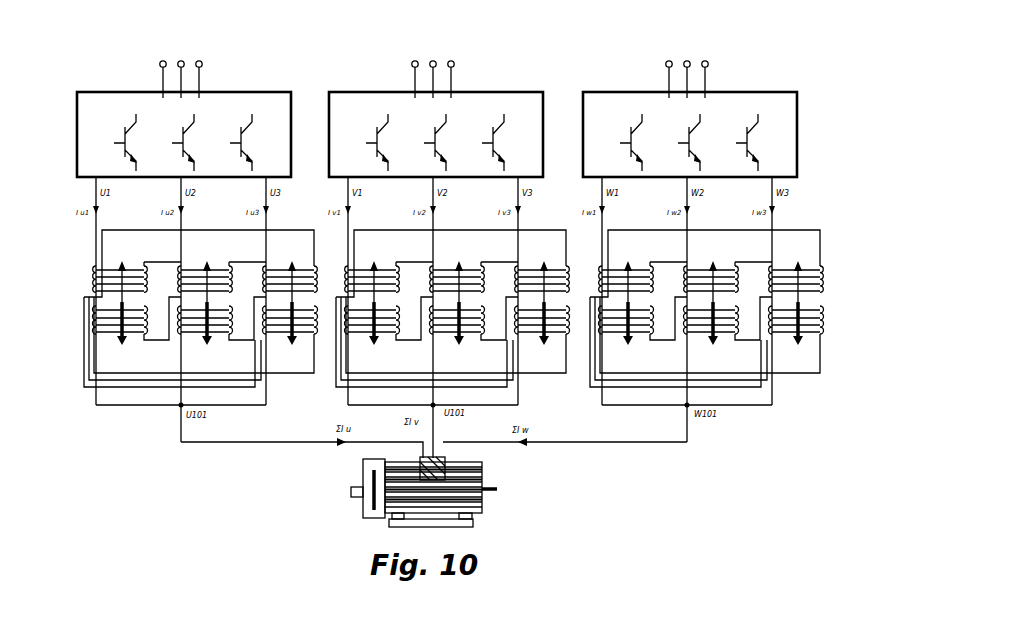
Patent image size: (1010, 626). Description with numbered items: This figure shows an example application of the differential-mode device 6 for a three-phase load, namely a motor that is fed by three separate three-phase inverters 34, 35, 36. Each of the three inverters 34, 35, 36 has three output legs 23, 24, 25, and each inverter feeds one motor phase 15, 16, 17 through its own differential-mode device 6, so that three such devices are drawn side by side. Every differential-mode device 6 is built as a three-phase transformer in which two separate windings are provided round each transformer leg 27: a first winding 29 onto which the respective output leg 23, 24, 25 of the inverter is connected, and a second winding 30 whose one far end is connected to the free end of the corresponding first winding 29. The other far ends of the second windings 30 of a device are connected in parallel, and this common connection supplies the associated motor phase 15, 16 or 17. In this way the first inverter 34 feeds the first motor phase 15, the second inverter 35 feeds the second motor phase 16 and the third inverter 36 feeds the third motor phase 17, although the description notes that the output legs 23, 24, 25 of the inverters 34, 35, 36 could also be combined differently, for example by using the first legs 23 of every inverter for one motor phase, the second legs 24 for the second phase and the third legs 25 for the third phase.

The output leg 23 is at (93, 188).
The output leg 24 is at (180, 187).
The output leg 25 is at (264, 188).
The 3-phase inverter 34 is at (243, 92).
The 3-phase inverter 35 is at (511, 92).
The 3-phase inverter 36 is at (770, 92).
The first winding 29 is at (255, 265).
The transformer leg 27 is at (192, 300).
The second winding 30 is at (176, 342).
The motor phase 15 is at (218, 445).
The motor phase 16 is at (445, 432).
The motor phase 17 is at (668, 447).
The differential-mode device 6 is at (125, 447).